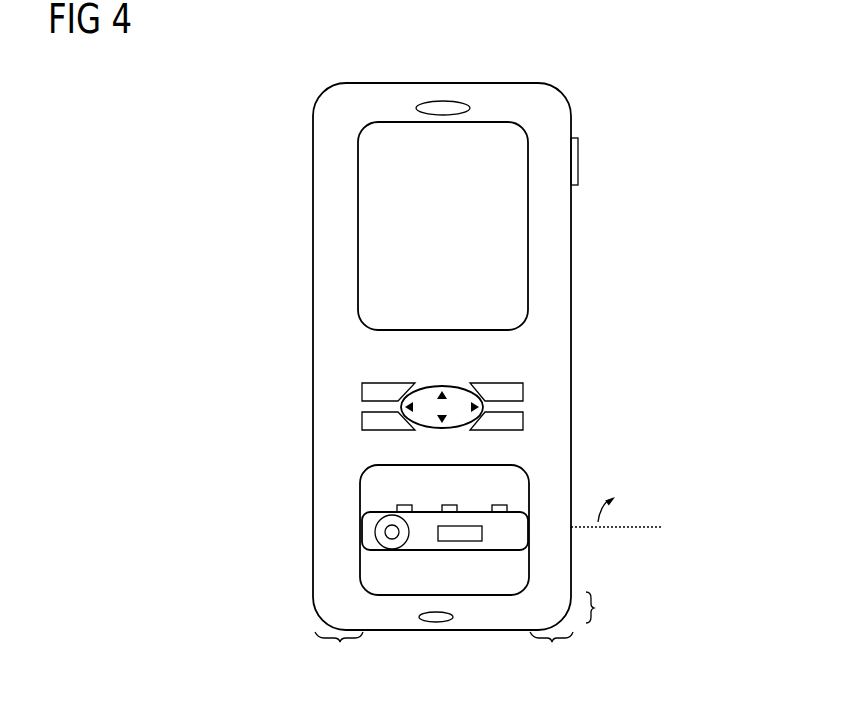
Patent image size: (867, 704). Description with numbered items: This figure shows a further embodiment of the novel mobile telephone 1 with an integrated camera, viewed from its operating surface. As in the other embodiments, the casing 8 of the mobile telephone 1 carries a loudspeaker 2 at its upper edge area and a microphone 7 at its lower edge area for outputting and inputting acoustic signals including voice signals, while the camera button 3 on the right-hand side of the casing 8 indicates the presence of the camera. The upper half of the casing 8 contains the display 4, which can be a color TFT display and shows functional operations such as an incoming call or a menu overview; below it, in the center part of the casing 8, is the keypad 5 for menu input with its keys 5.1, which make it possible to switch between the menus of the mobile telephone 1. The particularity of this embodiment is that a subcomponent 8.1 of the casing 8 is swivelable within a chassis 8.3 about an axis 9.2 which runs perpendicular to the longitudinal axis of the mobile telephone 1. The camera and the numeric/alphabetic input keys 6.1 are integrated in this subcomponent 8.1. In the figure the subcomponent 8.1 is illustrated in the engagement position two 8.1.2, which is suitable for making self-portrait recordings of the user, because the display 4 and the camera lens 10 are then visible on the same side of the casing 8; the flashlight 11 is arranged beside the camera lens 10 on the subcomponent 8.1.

The mobile telephone 1 is at (502, 315).
The loudspeaker 2 is at (442, 107).
The camera button 3 is at (578, 162).
The display of the mobile telephone 4 is at (451, 241).
The keypad for menu input 5 is at (503, 385).
The key of the menu input keypad 5.1 is at (513, 418).
The key of the numeric/alphabetic input pad 6.1 is at (448, 512).
The microphone 7 is at (436, 622).
The casing of the mobile telephone 8 is at (563, 210).
The swivelable subcomponent of the casing 8.1 is at (389, 495).
The engagement position "two" of the subcomponent 8.1.2 is at (386, 533).
The chassis of the casing 8.3 is at (478, 635).
The swivel axis running perpendicular to the longitudinal axis of the mobile telepho 9.2 is at (637, 527).
The camera lens 10 is at (392, 540).
The flashlight 11 is at (462, 537).